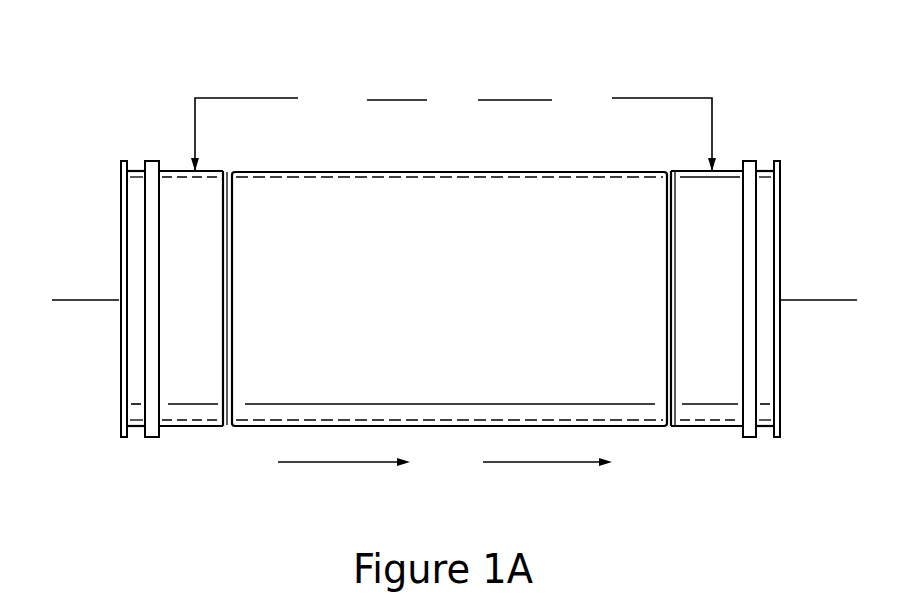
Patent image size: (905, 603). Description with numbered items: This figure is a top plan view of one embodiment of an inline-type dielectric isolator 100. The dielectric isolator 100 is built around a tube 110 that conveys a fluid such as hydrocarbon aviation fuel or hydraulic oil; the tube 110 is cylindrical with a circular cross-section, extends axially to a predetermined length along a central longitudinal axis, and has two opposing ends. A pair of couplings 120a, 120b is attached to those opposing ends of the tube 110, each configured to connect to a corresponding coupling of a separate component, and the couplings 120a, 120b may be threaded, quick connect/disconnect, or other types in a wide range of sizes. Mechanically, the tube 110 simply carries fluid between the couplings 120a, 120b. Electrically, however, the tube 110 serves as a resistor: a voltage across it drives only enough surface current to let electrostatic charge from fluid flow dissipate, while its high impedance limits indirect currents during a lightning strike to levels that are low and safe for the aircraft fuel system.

The inline-type dielectric isolator 100 is at (452, 262).
The tube 110 is at (440, 170).
The coupling 120a is at (185, 430).
The coupling 120b is at (717, 430).